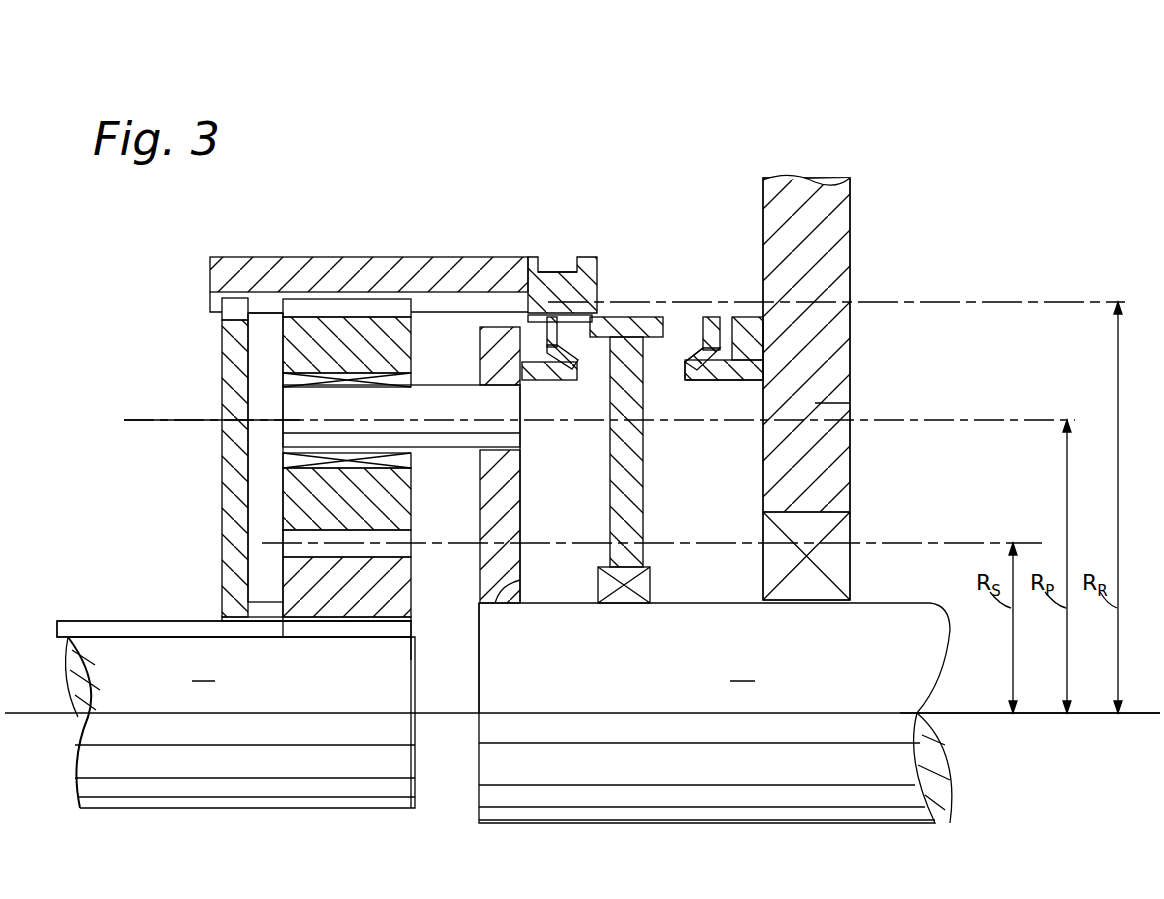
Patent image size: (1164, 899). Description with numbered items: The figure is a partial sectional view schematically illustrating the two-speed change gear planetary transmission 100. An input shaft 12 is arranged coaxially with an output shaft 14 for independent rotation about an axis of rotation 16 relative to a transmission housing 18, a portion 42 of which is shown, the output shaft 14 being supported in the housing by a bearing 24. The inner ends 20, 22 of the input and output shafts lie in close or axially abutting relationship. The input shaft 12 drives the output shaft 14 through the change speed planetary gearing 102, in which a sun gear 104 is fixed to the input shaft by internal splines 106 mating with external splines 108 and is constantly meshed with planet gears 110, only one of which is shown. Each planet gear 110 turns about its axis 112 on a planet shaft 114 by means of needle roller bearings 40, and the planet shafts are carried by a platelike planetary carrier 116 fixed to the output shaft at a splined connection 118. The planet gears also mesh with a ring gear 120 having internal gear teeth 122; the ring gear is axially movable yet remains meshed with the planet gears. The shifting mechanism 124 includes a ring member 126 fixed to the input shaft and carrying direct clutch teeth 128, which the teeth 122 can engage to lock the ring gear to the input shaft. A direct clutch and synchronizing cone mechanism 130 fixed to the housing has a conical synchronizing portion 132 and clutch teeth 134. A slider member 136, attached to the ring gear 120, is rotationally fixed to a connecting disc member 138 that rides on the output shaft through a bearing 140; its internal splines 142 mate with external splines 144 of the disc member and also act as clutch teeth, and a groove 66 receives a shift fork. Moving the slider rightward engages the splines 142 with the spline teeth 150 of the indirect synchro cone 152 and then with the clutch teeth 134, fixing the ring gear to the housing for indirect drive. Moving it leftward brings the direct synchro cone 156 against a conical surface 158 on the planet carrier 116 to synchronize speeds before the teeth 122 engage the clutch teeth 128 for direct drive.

The ring gear 120 is at (280, 272).
The direct clutch teeth 128 is at (234, 305).
The internal gear teeth 122 is at (262, 305).
The ring member 126 is at (232, 335).
The planet gear 110 is at (385, 516).
The needle roller bearings 40 is at (407, 375).
The planet shaft 114 is at (448, 437).
The sun gear 104 is at (392, 588).
The planetary carrier 116 is at (515, 500).
The splined connection 118 is at (512, 578).
The slider member 136 is at (585, 265).
The groove 66 is at (558, 270).
The direct synchro cone 156 is at (540, 325).
The internal splines 142 is at (573, 322).
The conical surface 158 is at (553, 368).
The external splines 144 is at (617, 330).
The connecting disc member 138 is at (628, 515).
The bearing 140 is at (652, 585).
The spline teeth 150 is at (717, 330).
The clutch teeth 134 is at (745, 330).
The direct clutch and synchronizing cone mechanism 130 is at (748, 368).
The indirect synchro cone 152 is at (688, 355).
The conical synchronizing portion 132 is at (712, 382).
The transmission housing 18 is at (850, 245).
The bearing 24 is at (850, 588).
The housing portion 42 is at (835, 402).
The planet gear axis 112 is at (160, 420).
The input shaft 12 is at (215, 679).
The external splines 108 is at (112, 620).
The internal splines 106 is at (397, 628).
The inner end of input shaft 20 is at (415, 662).
The output shaft 14 is at (755, 679).
The inner end of output shaft 22 is at (479, 700).
The axis of rotation 16 is at (958, 713).
The two-speed change gear planetary transmission 100 is at (668, 166).
The change speed planetary gearing 102 is at (399, 220).
The shifting mechanism 124 is at (702, 222).